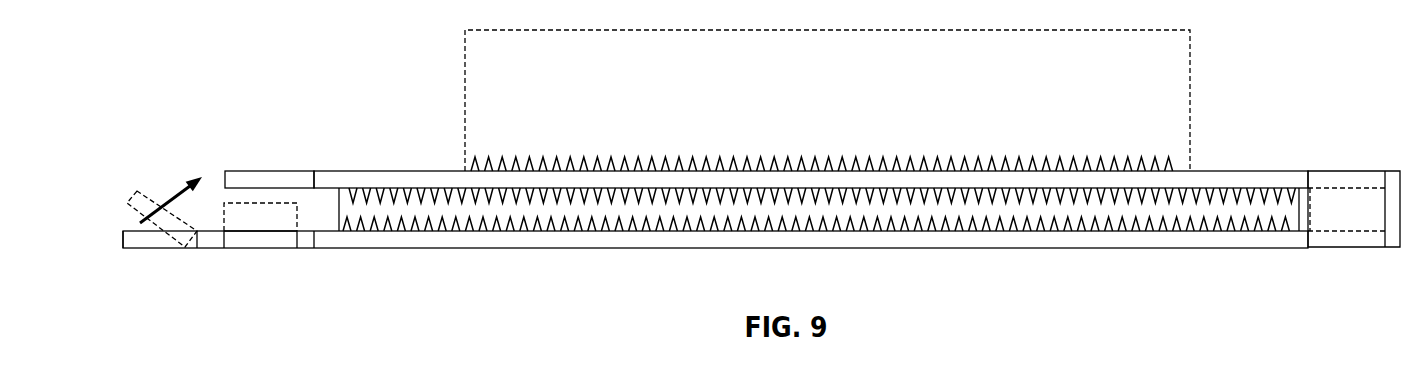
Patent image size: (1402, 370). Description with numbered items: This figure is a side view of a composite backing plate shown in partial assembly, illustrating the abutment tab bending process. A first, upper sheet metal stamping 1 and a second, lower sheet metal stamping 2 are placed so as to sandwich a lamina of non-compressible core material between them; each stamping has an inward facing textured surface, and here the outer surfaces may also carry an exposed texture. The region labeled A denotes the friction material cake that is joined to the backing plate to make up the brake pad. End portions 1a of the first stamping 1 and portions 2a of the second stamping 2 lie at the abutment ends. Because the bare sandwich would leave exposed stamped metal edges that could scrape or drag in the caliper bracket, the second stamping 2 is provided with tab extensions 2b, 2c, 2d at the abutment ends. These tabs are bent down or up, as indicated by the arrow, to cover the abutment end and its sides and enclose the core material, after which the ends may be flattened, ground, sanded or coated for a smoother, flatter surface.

The first sheet metal stamping 1 is at (376, 180).
The end portion of first plate member 1a is at (288, 180).
The second sheet metal stamping 2 is at (968, 238).
The joint portion of second plate member 2a is at (208, 242).
The tab extension 2b is at (267, 242).
The tab extension 2c is at (238, 218).
The tab extension 2d is at (132, 196).
The friction material cake A is at (827, 100).